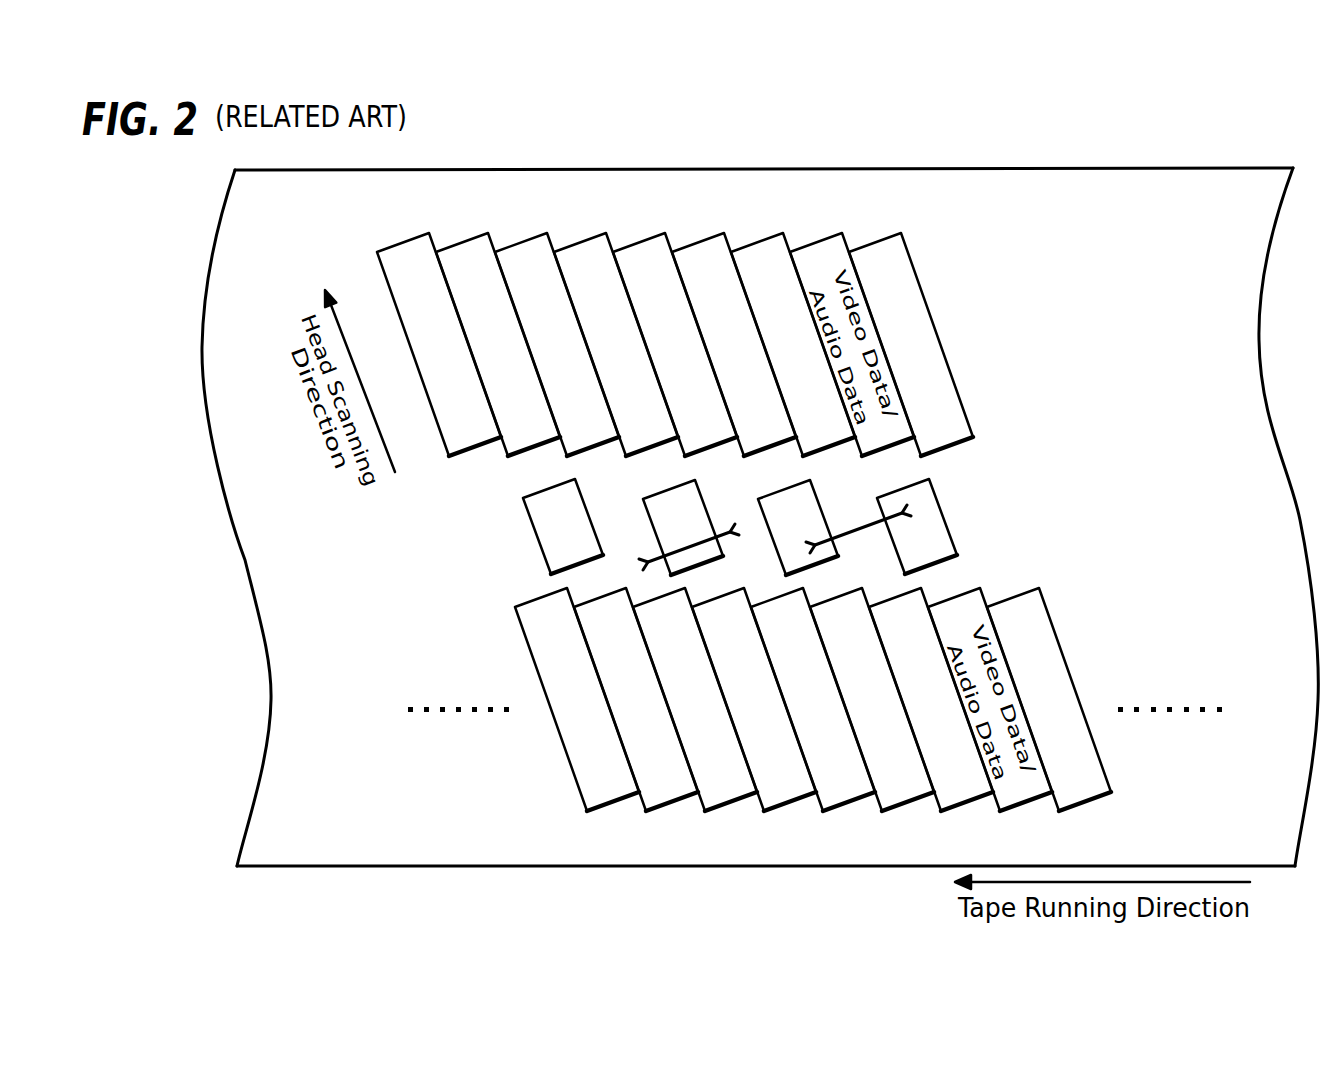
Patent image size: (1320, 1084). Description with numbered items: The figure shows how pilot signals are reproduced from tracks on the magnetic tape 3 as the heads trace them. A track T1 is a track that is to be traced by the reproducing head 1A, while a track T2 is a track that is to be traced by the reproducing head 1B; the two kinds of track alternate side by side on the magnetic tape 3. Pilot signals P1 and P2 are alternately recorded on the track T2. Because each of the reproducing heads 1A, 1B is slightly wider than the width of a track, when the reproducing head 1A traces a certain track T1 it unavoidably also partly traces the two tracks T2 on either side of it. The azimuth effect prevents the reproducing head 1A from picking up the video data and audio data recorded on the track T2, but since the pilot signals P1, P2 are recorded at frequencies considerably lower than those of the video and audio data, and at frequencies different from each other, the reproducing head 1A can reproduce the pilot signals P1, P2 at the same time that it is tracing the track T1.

The magnetic tape 3 is at (1093, 168).
The track T1 is at (675, 277).
The track T2 is at (675, 285).
The pilot signal P1 is at (839, 517).
The pilot signal P2 is at (644, 534).
The reproducing head 1A is at (848, 532).
The reproducing head 1B is at (692, 549).